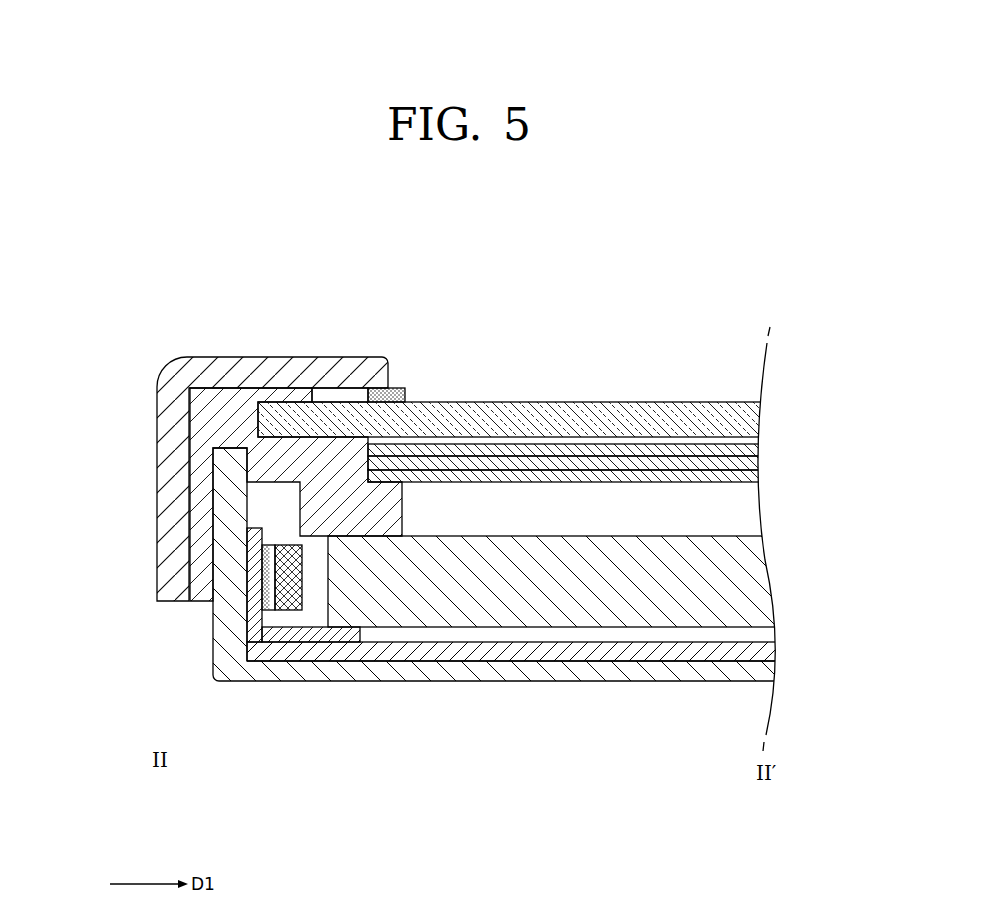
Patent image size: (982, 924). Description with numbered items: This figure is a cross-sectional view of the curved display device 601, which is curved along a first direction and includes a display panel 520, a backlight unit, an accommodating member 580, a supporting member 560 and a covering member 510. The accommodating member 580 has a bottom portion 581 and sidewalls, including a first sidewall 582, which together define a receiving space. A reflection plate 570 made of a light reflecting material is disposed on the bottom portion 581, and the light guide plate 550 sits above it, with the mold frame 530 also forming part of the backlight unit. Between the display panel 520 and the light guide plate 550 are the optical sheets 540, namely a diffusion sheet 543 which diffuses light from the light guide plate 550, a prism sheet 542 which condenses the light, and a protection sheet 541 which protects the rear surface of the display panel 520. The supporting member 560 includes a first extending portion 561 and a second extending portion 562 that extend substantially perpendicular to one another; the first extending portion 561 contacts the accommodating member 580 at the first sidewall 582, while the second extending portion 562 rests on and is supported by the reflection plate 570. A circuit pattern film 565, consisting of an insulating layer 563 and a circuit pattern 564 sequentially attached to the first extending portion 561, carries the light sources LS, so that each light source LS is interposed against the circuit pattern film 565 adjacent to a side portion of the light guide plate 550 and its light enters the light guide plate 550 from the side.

The curved display device 601 is at (664, 363).
The covering member 510 is at (167, 481).
The mold frame 530 is at (198, 421).
The display panel 520 is at (752, 417).
The optical sheets 540 is at (845, 440).
The protection sheet 541 is at (750, 450).
The prism sheet 542 is at (750, 463).
The diffusion sheet 543 is at (750, 478).
The light guide plate 550 is at (755, 591).
The supporting member 560 is at (310, 752).
The first extending portion 561 is at (253, 618).
The second extending portion 562 is at (290, 633).
The circuit pattern film 565 is at (80, 545).
The insulating layer 563 is at (262, 554).
The circuit pattern 564 is at (274, 583).
The light source LS is at (287, 602).
The reflection plate 570 is at (757, 651).
The accommodating member 580 is at (758, 671).
The bottom portion 581 is at (485, 678).
The first sidewall 582 is at (232, 524).